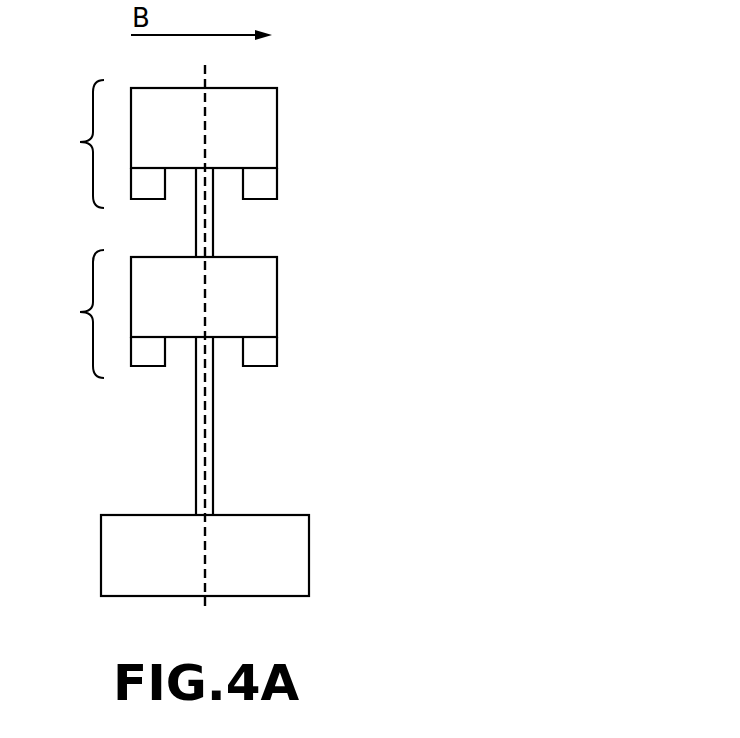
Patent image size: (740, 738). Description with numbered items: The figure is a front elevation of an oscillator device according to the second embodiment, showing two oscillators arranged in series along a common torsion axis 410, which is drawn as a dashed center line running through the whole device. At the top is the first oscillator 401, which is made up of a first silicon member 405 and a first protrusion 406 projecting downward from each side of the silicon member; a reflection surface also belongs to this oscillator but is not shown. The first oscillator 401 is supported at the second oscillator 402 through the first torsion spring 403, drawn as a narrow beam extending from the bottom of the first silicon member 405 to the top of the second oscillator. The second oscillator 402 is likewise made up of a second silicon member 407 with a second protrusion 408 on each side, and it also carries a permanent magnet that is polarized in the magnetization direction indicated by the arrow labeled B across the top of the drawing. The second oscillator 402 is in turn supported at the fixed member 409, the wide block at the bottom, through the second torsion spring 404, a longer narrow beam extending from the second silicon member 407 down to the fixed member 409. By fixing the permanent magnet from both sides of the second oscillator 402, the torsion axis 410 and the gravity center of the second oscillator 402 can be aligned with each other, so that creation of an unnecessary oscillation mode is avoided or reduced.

The first oscillator 401 is at (80, 142).
The second oscillator 402 is at (80, 312).
The first torsion spring 403 is at (213, 237).
The second torsion spring 404 is at (213, 473).
The first silicon member 405 is at (273, 133).
The first protrusion 406 is at (278, 190).
The second silicon member 407 is at (270, 302).
The second protrusion 408 is at (270, 357).
The fixed member 409 is at (298, 572).
The torsion axis 410 is at (206, 68).